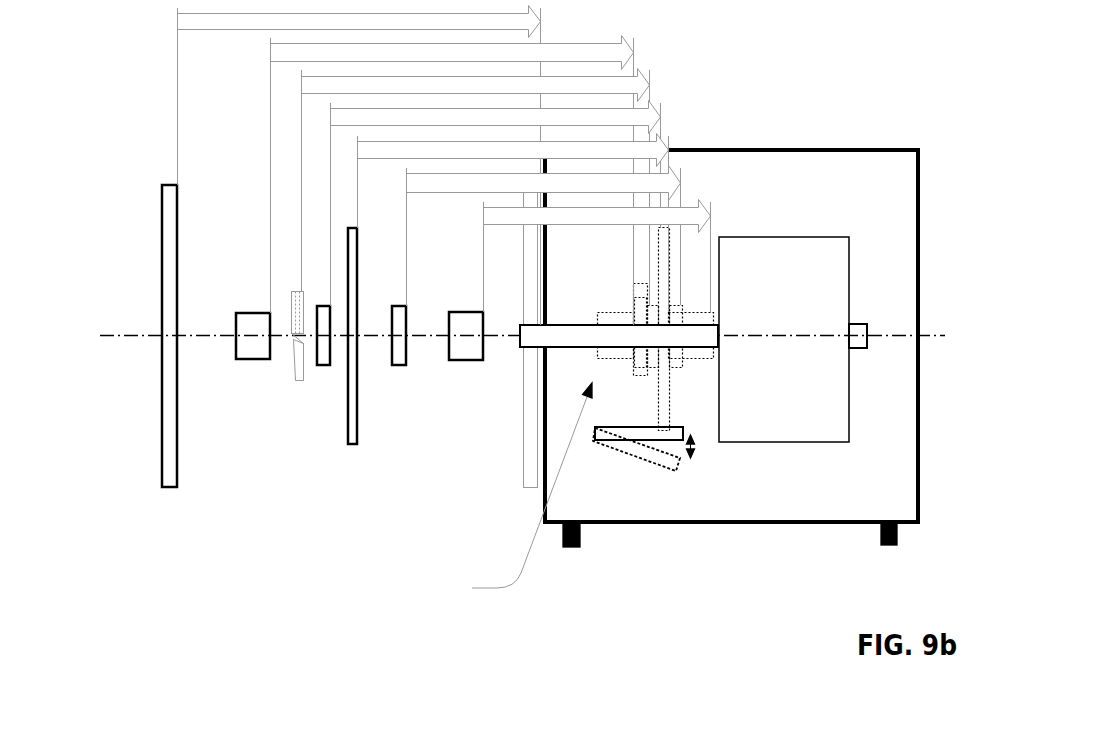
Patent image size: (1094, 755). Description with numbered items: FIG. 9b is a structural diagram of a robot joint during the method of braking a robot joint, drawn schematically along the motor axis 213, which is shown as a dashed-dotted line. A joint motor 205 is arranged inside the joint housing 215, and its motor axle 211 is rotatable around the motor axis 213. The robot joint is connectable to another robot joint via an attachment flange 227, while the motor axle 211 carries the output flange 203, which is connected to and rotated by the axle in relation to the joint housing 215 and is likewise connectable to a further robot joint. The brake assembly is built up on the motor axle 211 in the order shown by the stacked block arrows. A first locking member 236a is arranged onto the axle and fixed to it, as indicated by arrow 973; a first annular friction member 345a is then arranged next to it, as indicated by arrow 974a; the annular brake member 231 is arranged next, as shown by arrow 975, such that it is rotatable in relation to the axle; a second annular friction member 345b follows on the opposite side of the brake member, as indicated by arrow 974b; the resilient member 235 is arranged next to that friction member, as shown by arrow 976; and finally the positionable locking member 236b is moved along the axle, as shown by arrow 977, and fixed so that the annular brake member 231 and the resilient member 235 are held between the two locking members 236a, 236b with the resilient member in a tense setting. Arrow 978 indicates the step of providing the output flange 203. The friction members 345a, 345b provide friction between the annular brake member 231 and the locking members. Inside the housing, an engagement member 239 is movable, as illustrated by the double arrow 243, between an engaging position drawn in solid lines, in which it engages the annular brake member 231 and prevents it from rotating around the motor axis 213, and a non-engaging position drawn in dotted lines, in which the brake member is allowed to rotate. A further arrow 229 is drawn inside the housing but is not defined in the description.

The output flange 203 is at (162, 467).
The joint motor 205 is at (817, 307).
The motor axle 211 is at (570, 347).
The motor axis 213 is at (918, 335).
The joint housing 215 is at (918, 185).
The attachment flange 227 is at (897, 545).
The direction arrow 229 is at (511, 494).
The annular brake member 231 is at (351, 445).
The resilient member 235 is at (296, 352).
The first locking member 236a is at (470, 342).
The positionable locking member 236b is at (250, 348).
The engagement member 239 is at (643, 428).
The arrow indicating movement of engagement member 243 is at (688, 457).
The first annular friction member 345a is at (400, 360).
The second annular friction member 345b is at (315, 362).
The arrow indicating arranging first locking member 973 is at (597, 256).
The arrow indicating arranging first annular friction member 974a is at (544, 236).
The arrow indicating arranging second annular friction member 974b is at (496, 204).
The arrow indicating arranging annular brake member 975 is at (513, 223).
The arrow indicating arranging resilient member 976 is at (476, 187).
The arrow indicating moving positionable locking member 977 is at (452, 181).
The arrow indicating providing output flange 978 is at (359, 166).